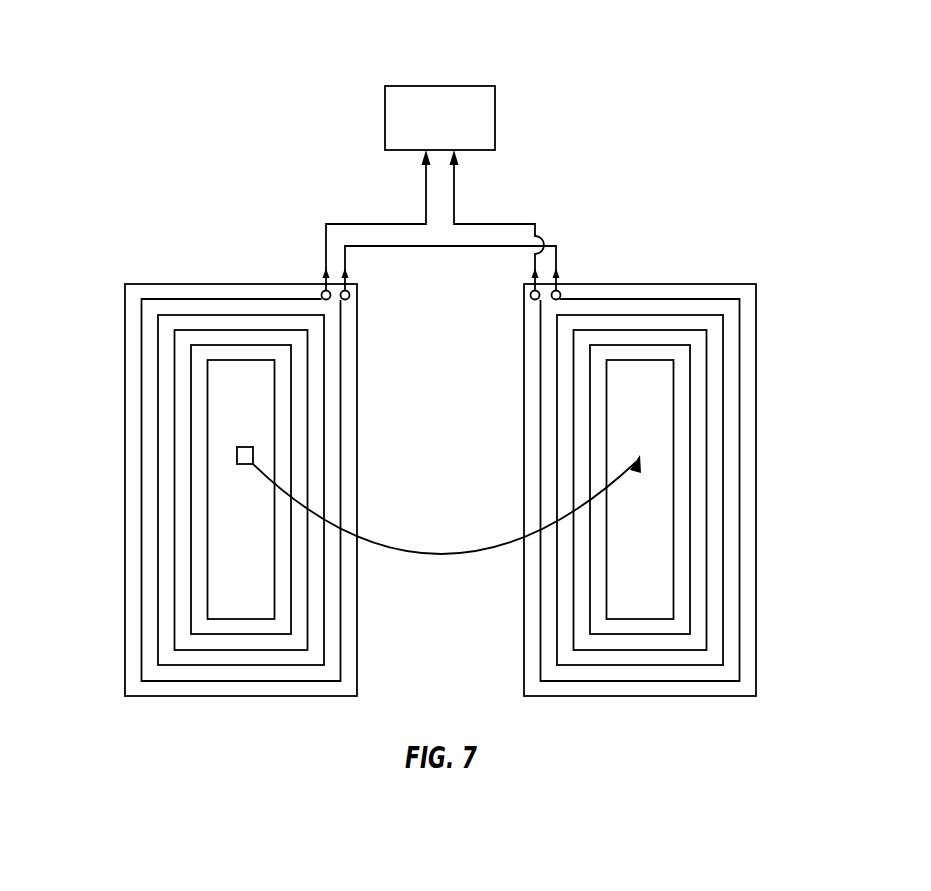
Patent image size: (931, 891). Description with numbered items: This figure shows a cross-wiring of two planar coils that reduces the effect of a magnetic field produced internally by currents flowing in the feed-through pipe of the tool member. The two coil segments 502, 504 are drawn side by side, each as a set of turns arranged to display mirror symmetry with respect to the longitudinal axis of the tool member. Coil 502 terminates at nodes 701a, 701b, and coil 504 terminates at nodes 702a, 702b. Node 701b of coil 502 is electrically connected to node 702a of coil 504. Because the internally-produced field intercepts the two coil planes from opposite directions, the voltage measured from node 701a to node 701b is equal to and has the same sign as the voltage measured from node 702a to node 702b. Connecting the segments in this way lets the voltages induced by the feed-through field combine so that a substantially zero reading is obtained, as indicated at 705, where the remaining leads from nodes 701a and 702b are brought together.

The substantially zero reading 705 is at (440, 86).
The planar coil 502 is at (125, 420).
The planar coil 504 is at (756, 388).
The node 701a is at (321, 292).
The node 701b is at (350, 292).
The node 702a is at (560, 293).
The node 702b is at (531, 298).